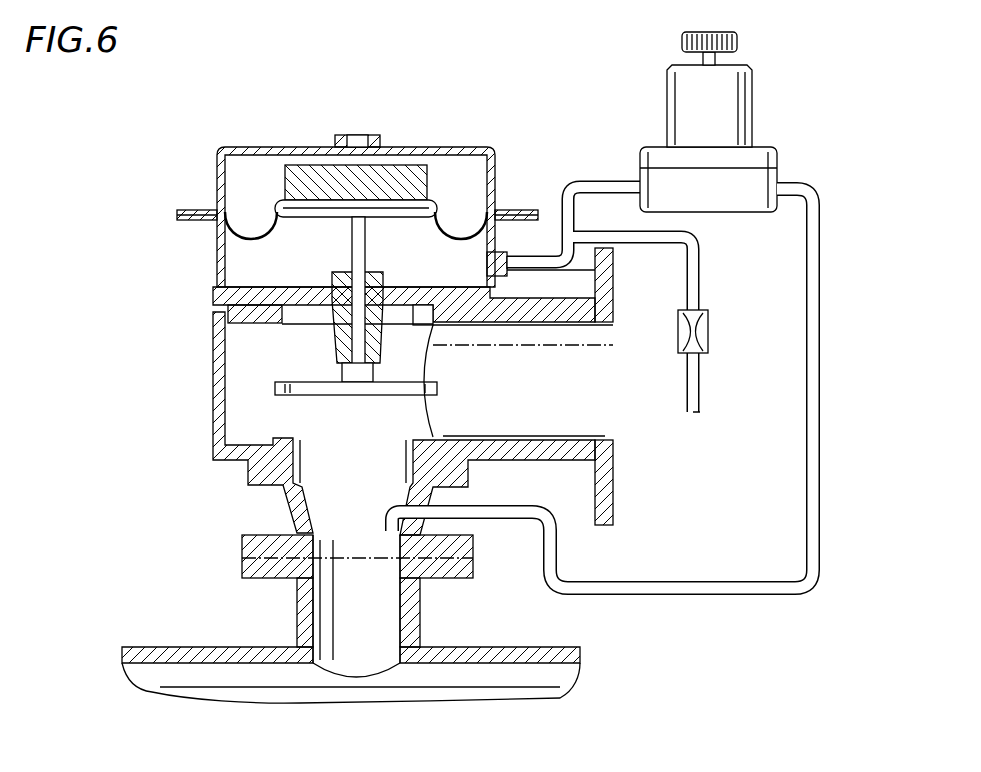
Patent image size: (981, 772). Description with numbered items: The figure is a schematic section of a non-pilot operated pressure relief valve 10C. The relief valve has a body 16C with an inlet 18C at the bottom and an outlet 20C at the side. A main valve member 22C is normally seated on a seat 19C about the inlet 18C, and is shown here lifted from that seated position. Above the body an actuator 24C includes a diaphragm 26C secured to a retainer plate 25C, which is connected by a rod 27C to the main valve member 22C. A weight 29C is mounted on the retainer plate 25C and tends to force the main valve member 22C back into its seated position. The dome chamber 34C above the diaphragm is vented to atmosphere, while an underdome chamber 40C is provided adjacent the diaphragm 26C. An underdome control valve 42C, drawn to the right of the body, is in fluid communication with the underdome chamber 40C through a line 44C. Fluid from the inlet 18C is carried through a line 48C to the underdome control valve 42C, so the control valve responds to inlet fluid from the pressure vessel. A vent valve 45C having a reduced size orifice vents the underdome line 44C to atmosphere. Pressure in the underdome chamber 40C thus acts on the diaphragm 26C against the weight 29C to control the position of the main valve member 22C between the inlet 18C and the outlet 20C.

The non-pilot operated pressure relief valve 10C is at (148, 265).
The body 16C is at (214, 397).
The inlet 18C is at (405, 620).
The seat 19C is at (422, 436).
The outlet 20C is at (610, 420).
The main valve member 22C is at (437, 388).
The actuator 24C is at (437, 169).
The retainer plate 25C is at (303, 224).
The diaphragm 26C is at (440, 227).
The rod 27C is at (222, 313).
The weight 29C is at (316, 178).
The dome chamber 34C is at (247, 178).
The underdome chamber 40C is at (492, 274).
The underdome control valve 42C is at (773, 74).
The line 44C is at (581, 178).
The vent valve 45C is at (708, 346).
The line 48C is at (806, 290).